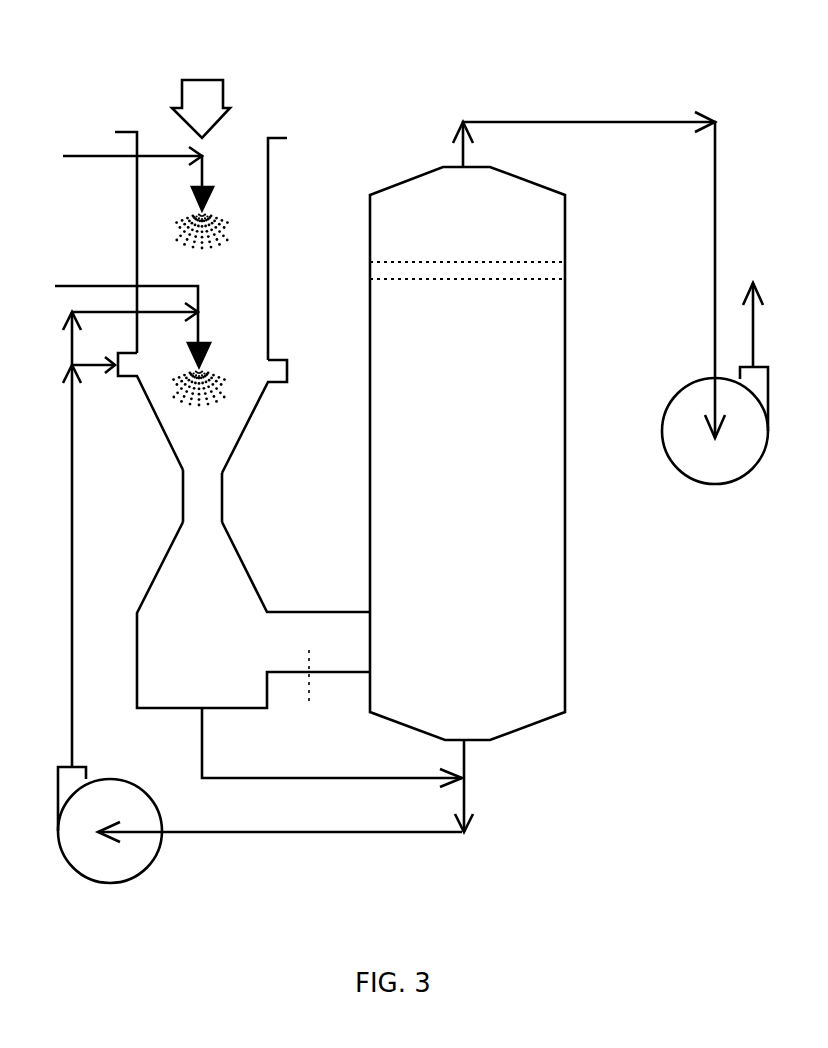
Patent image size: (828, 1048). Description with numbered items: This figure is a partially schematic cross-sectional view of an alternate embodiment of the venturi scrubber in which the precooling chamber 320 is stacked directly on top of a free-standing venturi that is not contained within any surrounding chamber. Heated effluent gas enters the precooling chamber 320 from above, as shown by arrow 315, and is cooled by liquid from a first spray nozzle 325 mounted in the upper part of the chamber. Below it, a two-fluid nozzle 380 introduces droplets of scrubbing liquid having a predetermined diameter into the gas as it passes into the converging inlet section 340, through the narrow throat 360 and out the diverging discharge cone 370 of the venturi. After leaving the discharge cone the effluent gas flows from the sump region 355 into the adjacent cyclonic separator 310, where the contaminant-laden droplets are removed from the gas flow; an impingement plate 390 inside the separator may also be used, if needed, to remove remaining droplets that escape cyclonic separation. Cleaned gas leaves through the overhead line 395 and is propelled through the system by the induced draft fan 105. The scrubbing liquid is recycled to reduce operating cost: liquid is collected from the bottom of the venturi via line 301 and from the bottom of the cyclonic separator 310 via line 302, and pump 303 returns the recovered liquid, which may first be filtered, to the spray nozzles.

The induced draft fan 105 is at (690, 462).
The line 301 is at (372, 782).
The line 302 is at (468, 768).
The pump 303 is at (135, 862).
The cyclonic separator 310 is at (566, 420).
The arrow 315 is at (206, 90).
The precooling chamber 320 is at (153, 220).
The first spray nozzle 325 is at (213, 197).
The converging section 340 is at (228, 420).
The sump 355 is at (315, 697).
The throat 360 is at (205, 500).
The diverging section 370 is at (228, 565).
The two-fluid nozzle 380 is at (206, 350).
The impingement plate 390 is at (532, 270).
The overflow line 395 is at (546, 118).